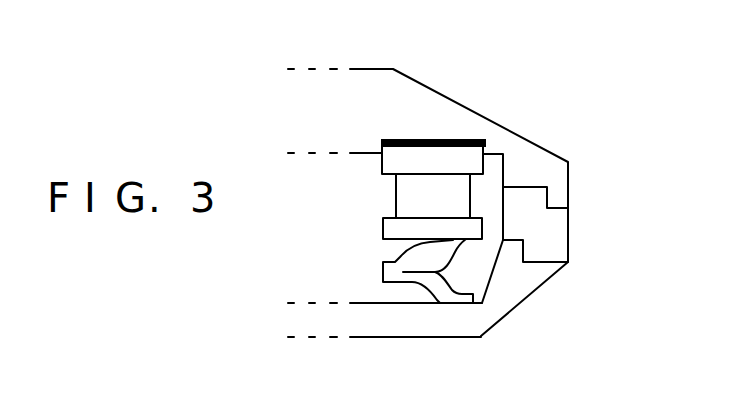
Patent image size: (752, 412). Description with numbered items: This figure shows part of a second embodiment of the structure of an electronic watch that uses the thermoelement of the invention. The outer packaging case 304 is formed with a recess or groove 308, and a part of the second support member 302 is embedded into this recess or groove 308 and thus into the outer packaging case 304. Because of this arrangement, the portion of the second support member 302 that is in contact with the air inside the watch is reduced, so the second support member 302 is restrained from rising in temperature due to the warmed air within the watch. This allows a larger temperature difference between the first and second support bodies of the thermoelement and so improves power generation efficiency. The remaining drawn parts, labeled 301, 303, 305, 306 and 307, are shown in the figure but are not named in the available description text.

The rotor assembly 301 is at (460, 228).
The second support member 302 is at (462, 152).
The stator coil 303 is at (407, 196).
The outer packaging case 304 is at (385, 92).
The bearing holder 305 is at (448, 292).
The base plate 306 is at (393, 323).
The circuit board 307 is at (545, 228).
The recess or groove 308 is at (428, 140).